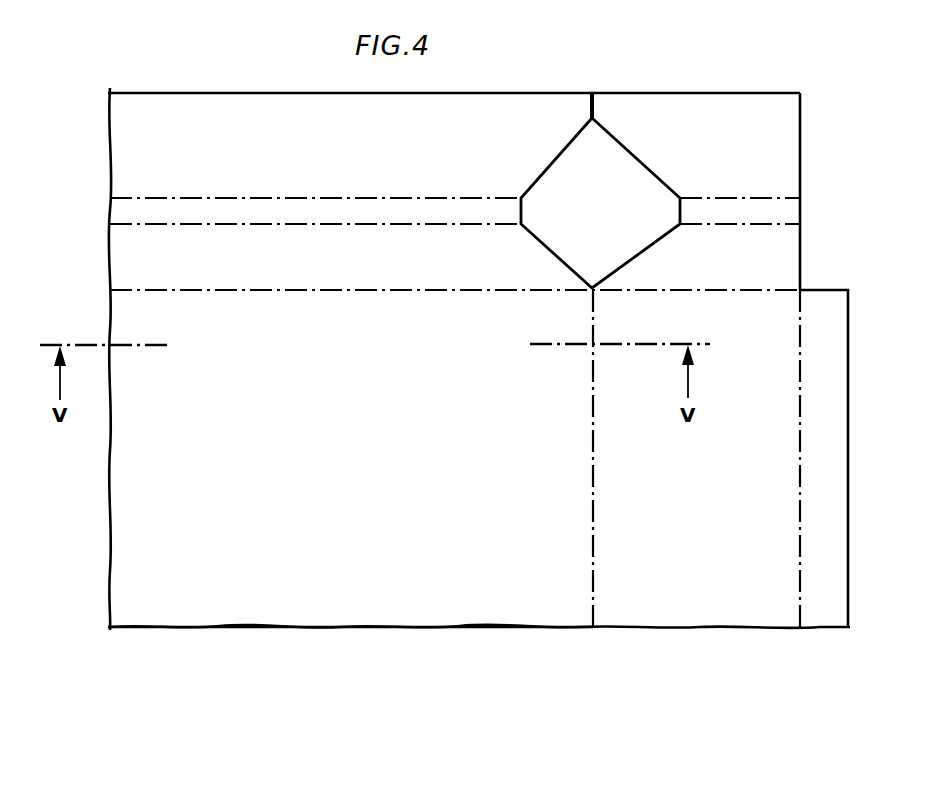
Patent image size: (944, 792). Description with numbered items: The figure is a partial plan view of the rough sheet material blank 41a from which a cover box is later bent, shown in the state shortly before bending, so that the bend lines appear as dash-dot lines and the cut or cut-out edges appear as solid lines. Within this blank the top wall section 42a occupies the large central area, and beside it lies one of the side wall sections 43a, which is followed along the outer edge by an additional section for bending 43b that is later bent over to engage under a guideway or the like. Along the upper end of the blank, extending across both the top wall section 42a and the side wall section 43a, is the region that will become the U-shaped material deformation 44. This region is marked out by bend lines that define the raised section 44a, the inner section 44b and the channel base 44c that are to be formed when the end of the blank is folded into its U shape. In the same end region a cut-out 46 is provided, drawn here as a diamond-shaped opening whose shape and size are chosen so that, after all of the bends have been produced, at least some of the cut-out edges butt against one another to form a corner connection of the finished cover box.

The rough sheet material blank 41a is at (290, 586).
The top wall section 42a is at (455, 595).
The side wall section 43a is at (695, 600).
The additional section for bending 43b is at (828, 610).
The material deformation 44 is at (832, 284).
The raised section 44a is at (620, 105).
The inner section 44b is at (660, 276).
The channel base 44c is at (338, 212).
The cut-out 46 is at (642, 177).